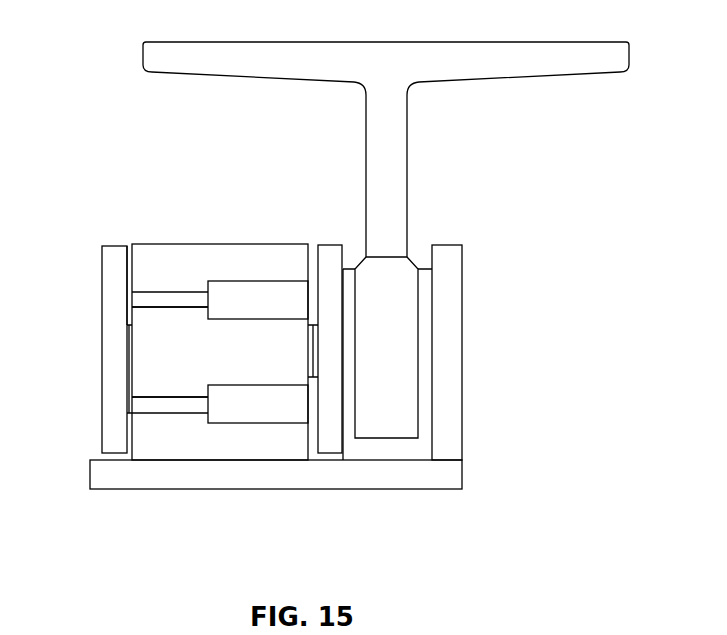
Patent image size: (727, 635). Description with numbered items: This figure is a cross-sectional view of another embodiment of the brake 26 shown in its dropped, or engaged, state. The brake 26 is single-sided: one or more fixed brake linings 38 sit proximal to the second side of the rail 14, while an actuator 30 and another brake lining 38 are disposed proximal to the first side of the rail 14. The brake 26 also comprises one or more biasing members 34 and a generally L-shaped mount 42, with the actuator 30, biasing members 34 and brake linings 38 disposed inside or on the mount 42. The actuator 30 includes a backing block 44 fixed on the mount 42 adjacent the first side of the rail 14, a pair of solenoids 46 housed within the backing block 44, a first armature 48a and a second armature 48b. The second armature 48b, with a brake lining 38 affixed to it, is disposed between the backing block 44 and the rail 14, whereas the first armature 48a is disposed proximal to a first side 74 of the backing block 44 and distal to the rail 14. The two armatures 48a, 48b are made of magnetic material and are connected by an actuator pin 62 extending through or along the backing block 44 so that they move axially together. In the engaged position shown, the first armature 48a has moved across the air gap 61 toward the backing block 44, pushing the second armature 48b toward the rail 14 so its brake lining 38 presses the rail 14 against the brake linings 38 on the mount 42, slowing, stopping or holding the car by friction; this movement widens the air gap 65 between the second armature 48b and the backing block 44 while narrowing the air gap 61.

The rail 14 is at (580, 42).
The brake 26 is at (123, 112).
The actuator 30 is at (171, 331).
The biasing member 34 is at (167, 280).
The brake lining 38 is at (349, 273).
The mount 42 is at (447, 382).
The backing block 44 is at (232, 258).
The solenoid 46 is at (255, 288).
The first armature 48a is at (115, 269).
The second armature 48b is at (332, 430).
The air gap 61 is at (128, 253).
The actuator pin 62 is at (127, 353).
The air gap 65 is at (313, 255).
The first side of the backing block 74 is at (155, 372).